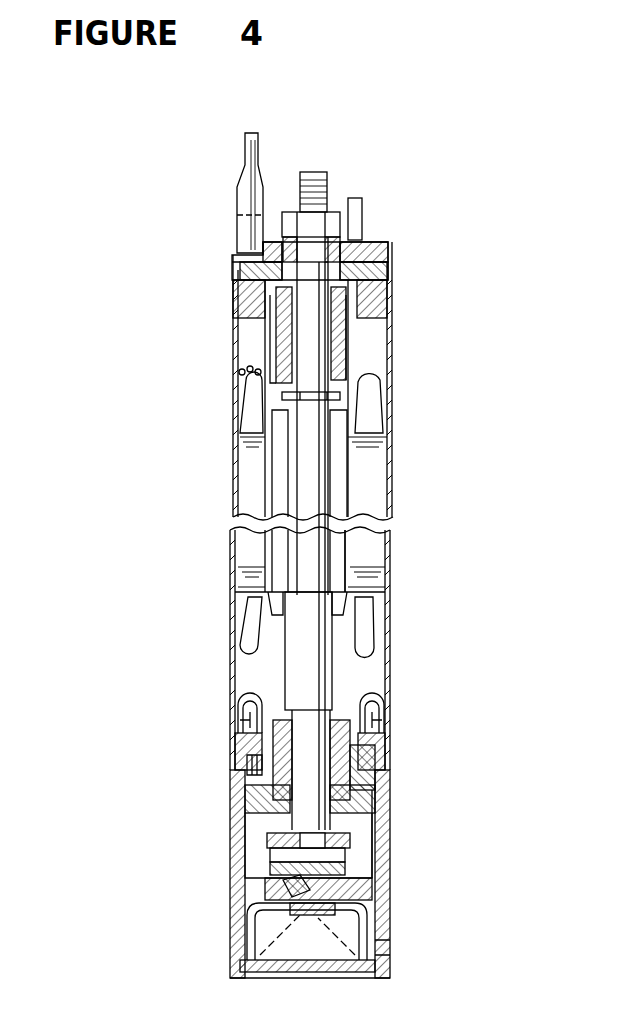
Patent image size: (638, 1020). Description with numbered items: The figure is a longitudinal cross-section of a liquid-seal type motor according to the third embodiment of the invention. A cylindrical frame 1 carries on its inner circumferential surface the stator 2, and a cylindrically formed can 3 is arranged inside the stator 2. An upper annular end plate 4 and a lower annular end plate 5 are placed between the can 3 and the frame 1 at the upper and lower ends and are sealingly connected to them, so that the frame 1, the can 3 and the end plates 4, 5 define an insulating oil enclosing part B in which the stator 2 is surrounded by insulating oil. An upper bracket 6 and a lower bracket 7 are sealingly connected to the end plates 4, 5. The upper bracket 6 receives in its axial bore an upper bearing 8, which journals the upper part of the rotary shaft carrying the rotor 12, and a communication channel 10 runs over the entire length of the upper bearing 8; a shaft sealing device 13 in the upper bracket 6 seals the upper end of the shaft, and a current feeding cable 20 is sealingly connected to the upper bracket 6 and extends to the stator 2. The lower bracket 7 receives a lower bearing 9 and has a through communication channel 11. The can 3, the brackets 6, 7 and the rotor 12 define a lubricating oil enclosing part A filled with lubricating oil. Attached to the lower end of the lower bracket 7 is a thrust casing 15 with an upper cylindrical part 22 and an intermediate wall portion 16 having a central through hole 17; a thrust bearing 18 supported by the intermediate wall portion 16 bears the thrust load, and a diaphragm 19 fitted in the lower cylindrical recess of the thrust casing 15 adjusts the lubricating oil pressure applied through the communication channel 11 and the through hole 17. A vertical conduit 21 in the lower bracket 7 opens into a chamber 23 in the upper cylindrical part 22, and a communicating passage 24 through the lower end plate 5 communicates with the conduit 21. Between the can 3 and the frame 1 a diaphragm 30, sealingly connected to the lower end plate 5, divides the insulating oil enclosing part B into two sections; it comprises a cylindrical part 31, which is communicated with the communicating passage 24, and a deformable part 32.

The cylindrical frame 1 is at (237, 508).
The stator 2 is at (247, 487).
The can 3 is at (270, 665).
The upper annular end plate 4 is at (235, 297).
The lower annular end plate 5 is at (252, 750).
The upper bracket 6 is at (237, 270).
The lower bracket 7 is at (242, 790).
The upper bearing 8 is at (340, 355).
The lower bearing 9 is at (390, 780).
The communication channel 10 is at (288, 358).
The communication channel 11 is at (248, 770).
The rotor 12 is at (280, 460).
The shaft sealing device 13 is at (336, 262).
The thrust casing 15 is at (240, 815).
The intermediate wall portion 16 is at (247, 895).
The through hole 17 is at (390, 915).
The thrust bearing 18 is at (390, 890).
The diaphragm 19 is at (247, 930).
The current feeding cable 20 is at (248, 208).
The conduit 21 is at (390, 805).
The upper cylindrical part 22 is at (390, 830).
The chamber 23 is at (390, 860).
The communicating passage 24 is at (390, 755).
The diaphragm 30 is at (235, 720).
The cylindrical part 31 is at (240, 730).
The deformable part 32 is at (245, 696).
The lubricating oil enclosing part A is at (347, 403).
The insulating oil enclosing part B is at (245, 400).